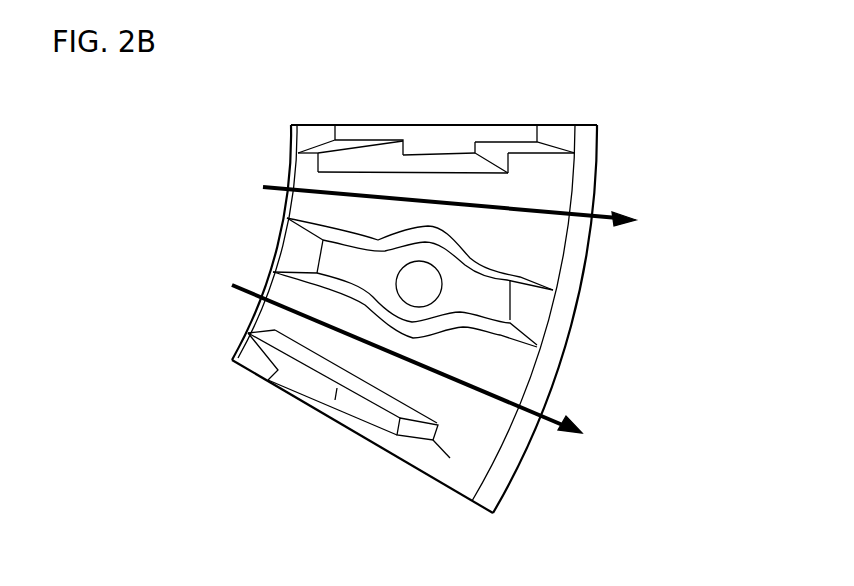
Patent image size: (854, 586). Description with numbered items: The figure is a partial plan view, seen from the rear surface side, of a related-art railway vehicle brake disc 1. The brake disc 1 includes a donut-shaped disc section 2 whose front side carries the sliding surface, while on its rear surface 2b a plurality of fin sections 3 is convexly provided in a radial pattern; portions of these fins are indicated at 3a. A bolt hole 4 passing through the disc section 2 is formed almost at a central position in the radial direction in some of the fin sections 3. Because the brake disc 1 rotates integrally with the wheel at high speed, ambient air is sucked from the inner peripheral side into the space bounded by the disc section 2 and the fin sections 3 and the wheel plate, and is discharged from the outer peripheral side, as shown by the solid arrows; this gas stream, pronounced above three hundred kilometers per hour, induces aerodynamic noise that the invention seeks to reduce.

The brake disc 1 is at (276, 130).
The disc section 2 is at (482, 442).
The rear surface 2b is at (500, 450).
The fin section 3 is at (562, 135).
The rib 3a is at (353, 130).
The bolt hole 4 is at (427, 273).